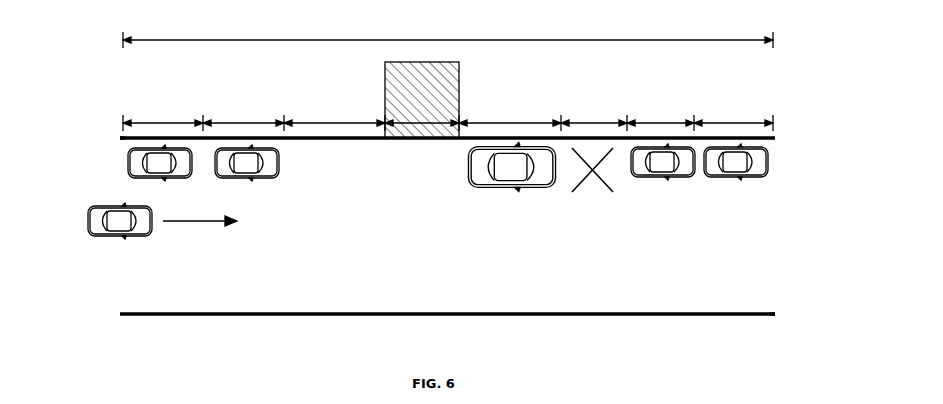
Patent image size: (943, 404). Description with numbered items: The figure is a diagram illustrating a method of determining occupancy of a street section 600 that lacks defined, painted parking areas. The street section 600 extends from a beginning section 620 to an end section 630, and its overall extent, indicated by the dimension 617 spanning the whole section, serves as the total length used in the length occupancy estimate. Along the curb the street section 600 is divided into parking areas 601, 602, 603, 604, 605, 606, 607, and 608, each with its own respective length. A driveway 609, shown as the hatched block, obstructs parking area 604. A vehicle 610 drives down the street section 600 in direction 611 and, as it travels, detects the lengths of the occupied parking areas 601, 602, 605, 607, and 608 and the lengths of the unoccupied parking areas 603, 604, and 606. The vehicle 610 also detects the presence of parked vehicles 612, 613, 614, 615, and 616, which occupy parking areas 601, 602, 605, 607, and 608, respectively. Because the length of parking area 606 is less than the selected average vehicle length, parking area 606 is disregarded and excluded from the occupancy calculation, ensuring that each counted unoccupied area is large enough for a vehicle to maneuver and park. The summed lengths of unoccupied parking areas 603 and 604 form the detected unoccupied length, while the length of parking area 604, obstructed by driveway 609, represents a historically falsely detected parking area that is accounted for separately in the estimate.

The street section 600 is at (105, 74).
The parking area 601 is at (163, 114).
The parking area 602 is at (243, 114).
The parking area 603 is at (334, 114).
The parking area 604 is at (417, 115).
The parking area 605 is at (510, 114).
The parking area 606 is at (594, 114).
The parking area 607 is at (660, 114).
The parking area 608 is at (733, 114).
The driveway 609 is at (461, 84).
The vehicle 610 is at (109, 214).
The direction 611 is at (200, 231).
The parked vehicle 612 is at (156, 181).
The parked vehicle 613 is at (243, 181).
The parked vehicle 614 is at (494, 191).
The parked vehicle 615 is at (648, 184).
The parked vehicle 616 is at (737, 184).
The road section 617 is at (448, 33).
The beginning section 620 is at (76, 195).
The end section 630 is at (809, 276).